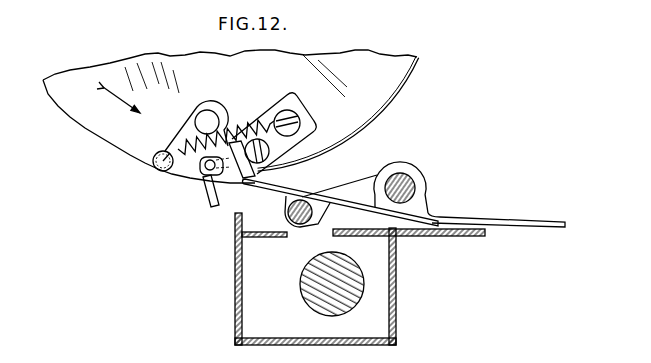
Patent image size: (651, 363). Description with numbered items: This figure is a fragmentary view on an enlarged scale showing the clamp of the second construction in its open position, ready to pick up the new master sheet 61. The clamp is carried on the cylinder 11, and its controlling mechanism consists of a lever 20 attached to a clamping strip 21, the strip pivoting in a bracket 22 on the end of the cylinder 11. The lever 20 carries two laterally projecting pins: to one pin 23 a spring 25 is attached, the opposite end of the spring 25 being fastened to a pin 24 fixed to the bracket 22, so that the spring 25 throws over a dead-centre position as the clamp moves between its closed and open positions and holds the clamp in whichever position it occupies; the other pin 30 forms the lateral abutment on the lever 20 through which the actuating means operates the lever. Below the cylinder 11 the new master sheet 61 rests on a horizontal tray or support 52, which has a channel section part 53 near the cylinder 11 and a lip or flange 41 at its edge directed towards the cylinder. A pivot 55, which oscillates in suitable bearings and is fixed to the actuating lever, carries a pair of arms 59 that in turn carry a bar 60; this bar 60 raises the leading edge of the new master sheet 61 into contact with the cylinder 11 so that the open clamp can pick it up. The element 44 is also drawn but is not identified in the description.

The cylinder 11 is at (382, 80).
The lever 20 is at (188, 131).
The clamping strip 21 is at (203, 189).
The bracket 22 is at (270, 118).
The pin 23 is at (158, 164).
The pin 24 is at (297, 116).
The spring 25 is at (180, 138).
The pin 30 is at (208, 122).
The lip or flange 41 is at (236, 221).
The strip 44 is at (520, 224).
The tray or support 52 is at (495, 236).
The channel section part 53 is at (396, 284).
The pivot 55 is at (408, 182).
The arms 59 is at (355, 193).
The bar 60 is at (300, 206).
The new master sheet 61 is at (320, 225).